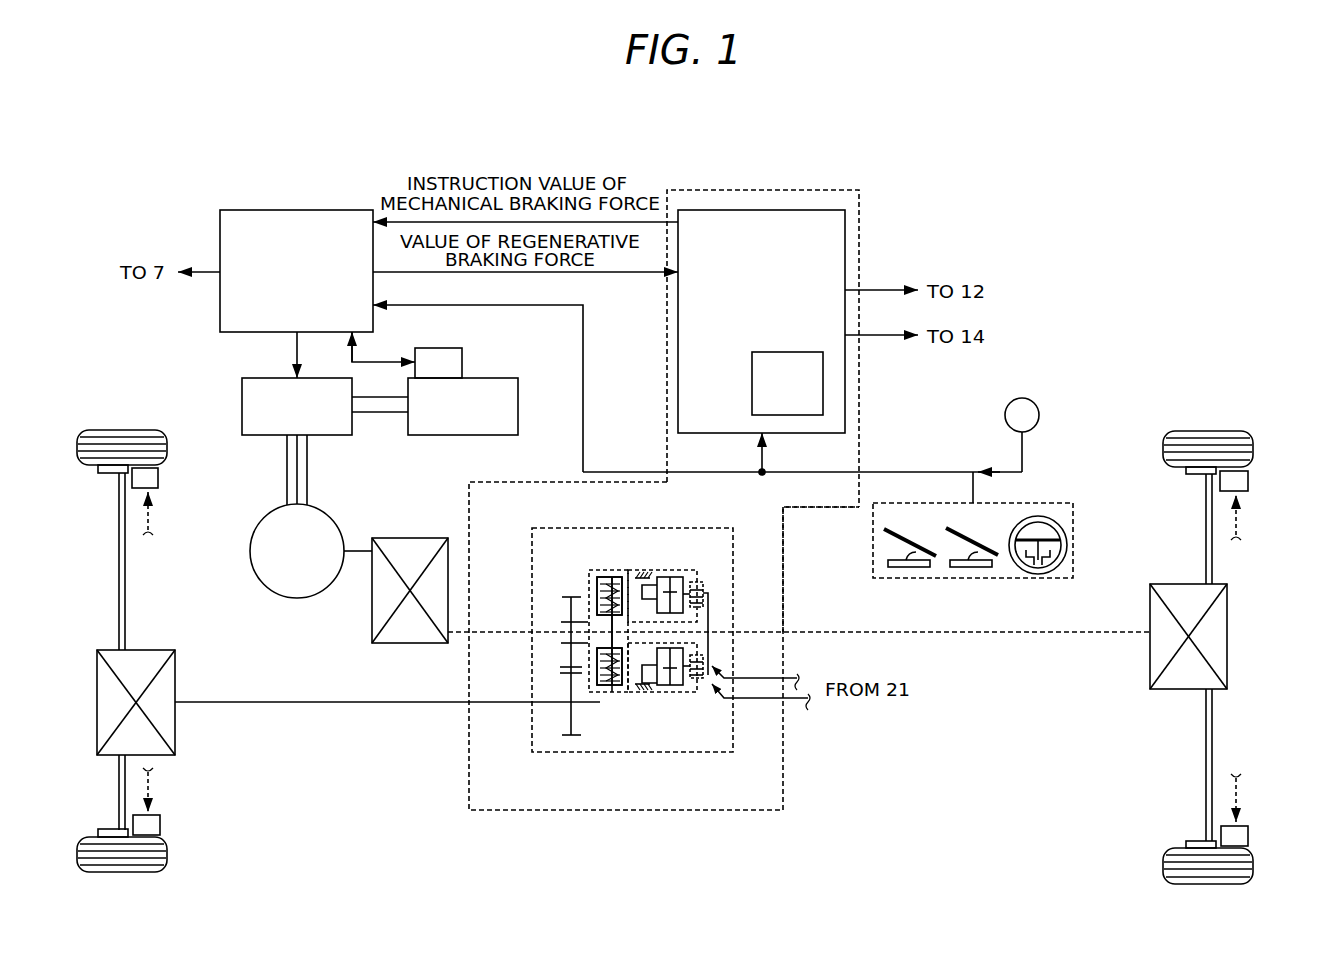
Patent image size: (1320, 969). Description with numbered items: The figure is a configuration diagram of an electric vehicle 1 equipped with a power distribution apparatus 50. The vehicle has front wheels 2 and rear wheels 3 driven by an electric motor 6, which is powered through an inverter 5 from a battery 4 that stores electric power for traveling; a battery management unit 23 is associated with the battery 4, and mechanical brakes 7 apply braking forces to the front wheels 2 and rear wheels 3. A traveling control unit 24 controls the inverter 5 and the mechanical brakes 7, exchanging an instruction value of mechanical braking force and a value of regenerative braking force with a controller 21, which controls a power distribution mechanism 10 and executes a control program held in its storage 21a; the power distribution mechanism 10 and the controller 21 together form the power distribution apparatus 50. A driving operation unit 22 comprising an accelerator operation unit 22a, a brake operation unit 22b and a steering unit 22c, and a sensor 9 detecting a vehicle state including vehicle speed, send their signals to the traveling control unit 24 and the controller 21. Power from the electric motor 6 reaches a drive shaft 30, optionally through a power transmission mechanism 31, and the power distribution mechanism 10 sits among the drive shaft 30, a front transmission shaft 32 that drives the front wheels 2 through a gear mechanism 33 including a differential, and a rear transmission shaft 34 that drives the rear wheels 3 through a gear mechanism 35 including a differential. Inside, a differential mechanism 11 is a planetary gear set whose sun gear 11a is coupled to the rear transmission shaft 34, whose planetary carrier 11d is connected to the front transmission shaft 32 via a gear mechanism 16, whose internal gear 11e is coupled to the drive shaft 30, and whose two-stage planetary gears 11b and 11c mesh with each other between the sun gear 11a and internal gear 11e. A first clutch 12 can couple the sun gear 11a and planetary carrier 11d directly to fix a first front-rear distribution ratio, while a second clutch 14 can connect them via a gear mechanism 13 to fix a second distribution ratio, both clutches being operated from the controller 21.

The electric vehicle 1 is at (1067, 180).
The front wheels 2 is at (152, 430).
The rear wheels 3 is at (1240, 433).
The battery 4 is at (519, 402).
The inverter 5 is at (243, 380).
The electric motor 6 is at (313, 507).
The mechanical brakes 7 is at (160, 477).
The sensor 9 is at (1034, 404).
The power distribution mechanism 10 is at (557, 527).
The differential mechanism 11 is at (606, 700).
The sun gear 11a is at (610, 638).
The planetary gear 11b is at (628, 690).
The planetary gear 11c is at (620, 580).
The planetary carrier 11d is at (603, 600).
The internal gear 11e is at (617, 692).
The first clutch 12 is at (713, 605).
The gear mechanism 13 is at (665, 580).
The second clutch 14 is at (712, 586).
The gear mechanism 16 is at (560, 689).
The controller 21 is at (803, 209).
The storage 21a is at (793, 351).
The driving operation unit 22 is at (1050, 503).
The accelerator operation unit 22a is at (910, 568).
The brake operation unit 22b is at (972, 568).
The steering unit 22c is at (1040, 574).
The battery management unit 23 is at (462, 364).
The traveling control unit 24 is at (288, 209).
The drive shaft 30 is at (512, 628).
The power transmission mechanism 31 is at (423, 537).
The front transmission shaft 32 is at (390, 700).
The gear mechanism 33 is at (167, 650).
The rear transmission shaft 34 is at (808, 630).
The gear mechanism 35 is at (1174, 583).
The power distribution apparatus 50 is at (858, 190).